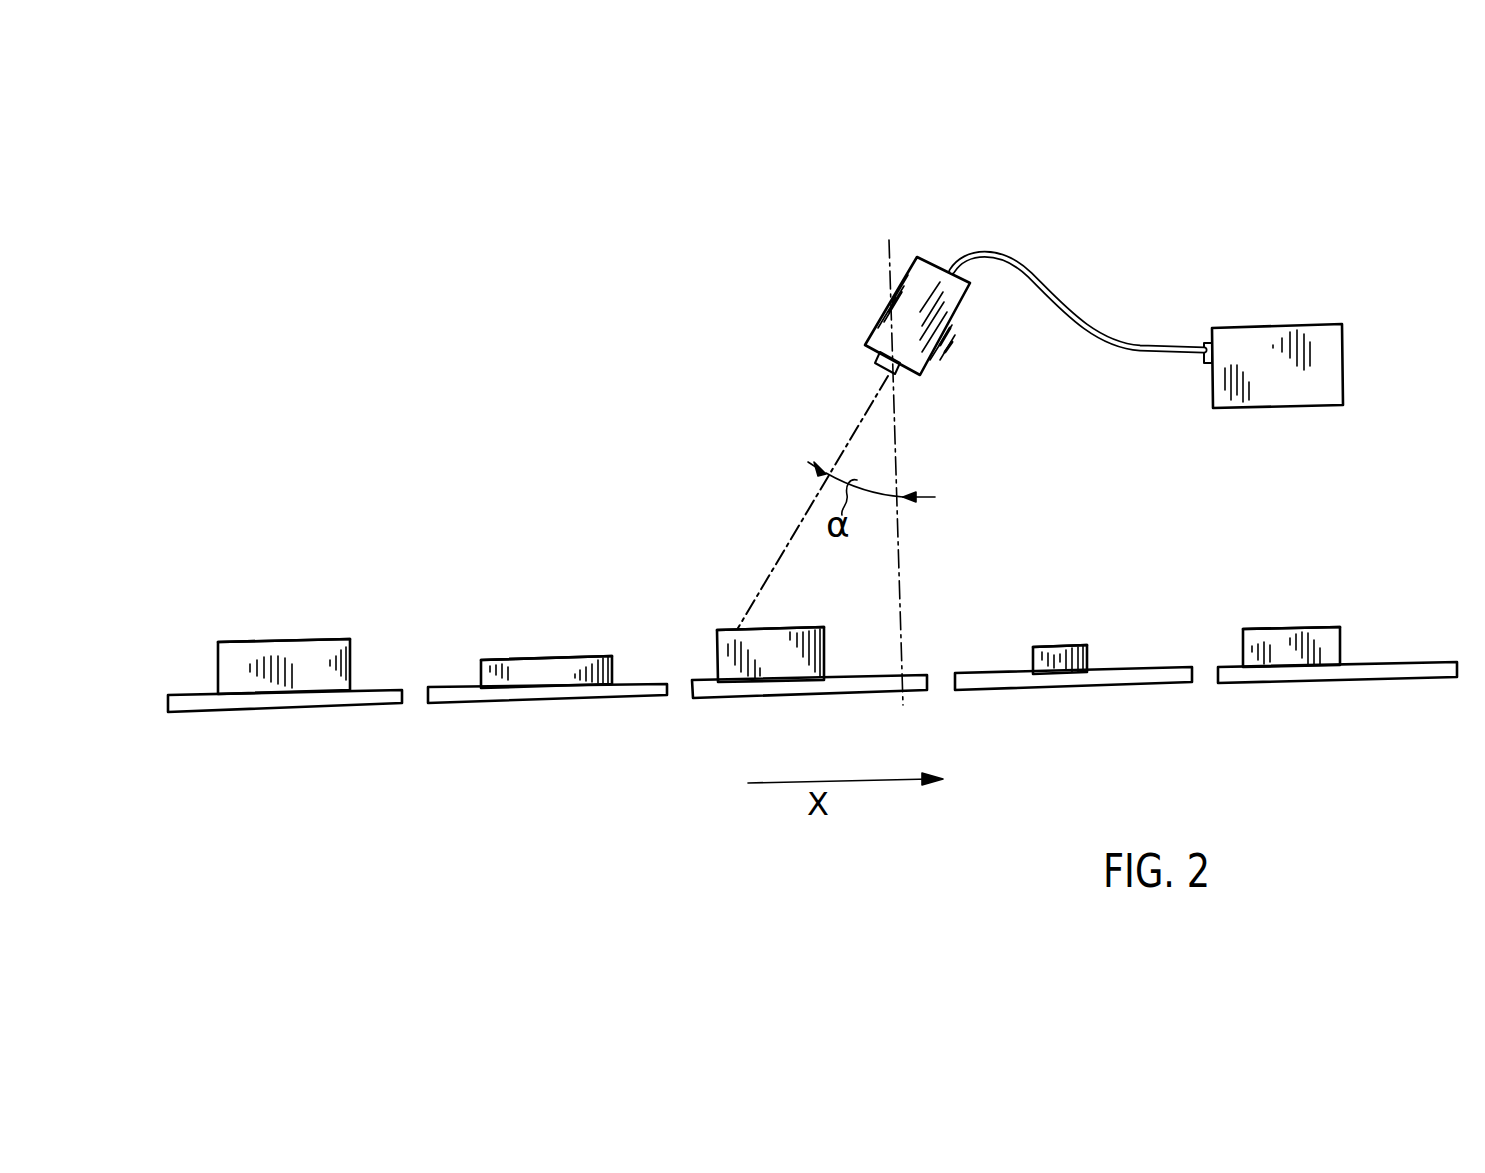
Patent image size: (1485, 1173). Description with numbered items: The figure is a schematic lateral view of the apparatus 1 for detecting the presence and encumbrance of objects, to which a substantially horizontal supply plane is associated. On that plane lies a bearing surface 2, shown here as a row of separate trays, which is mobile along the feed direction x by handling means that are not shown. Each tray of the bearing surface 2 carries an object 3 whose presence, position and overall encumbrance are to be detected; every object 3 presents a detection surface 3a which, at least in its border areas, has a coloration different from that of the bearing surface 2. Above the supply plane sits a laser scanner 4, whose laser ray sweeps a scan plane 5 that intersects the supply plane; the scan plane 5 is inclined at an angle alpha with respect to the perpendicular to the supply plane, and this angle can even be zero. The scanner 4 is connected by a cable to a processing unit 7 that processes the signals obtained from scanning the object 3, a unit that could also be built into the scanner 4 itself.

The apparatus 1 is at (630, 392).
The bearing surface 2 is at (380, 688).
The object 3 is at (223, 668).
The detection surface 3a is at (288, 640).
The laser scanner 4 is at (885, 325).
The scan plane 5 is at (855, 430).
The processing unit 7 is at (1265, 340).